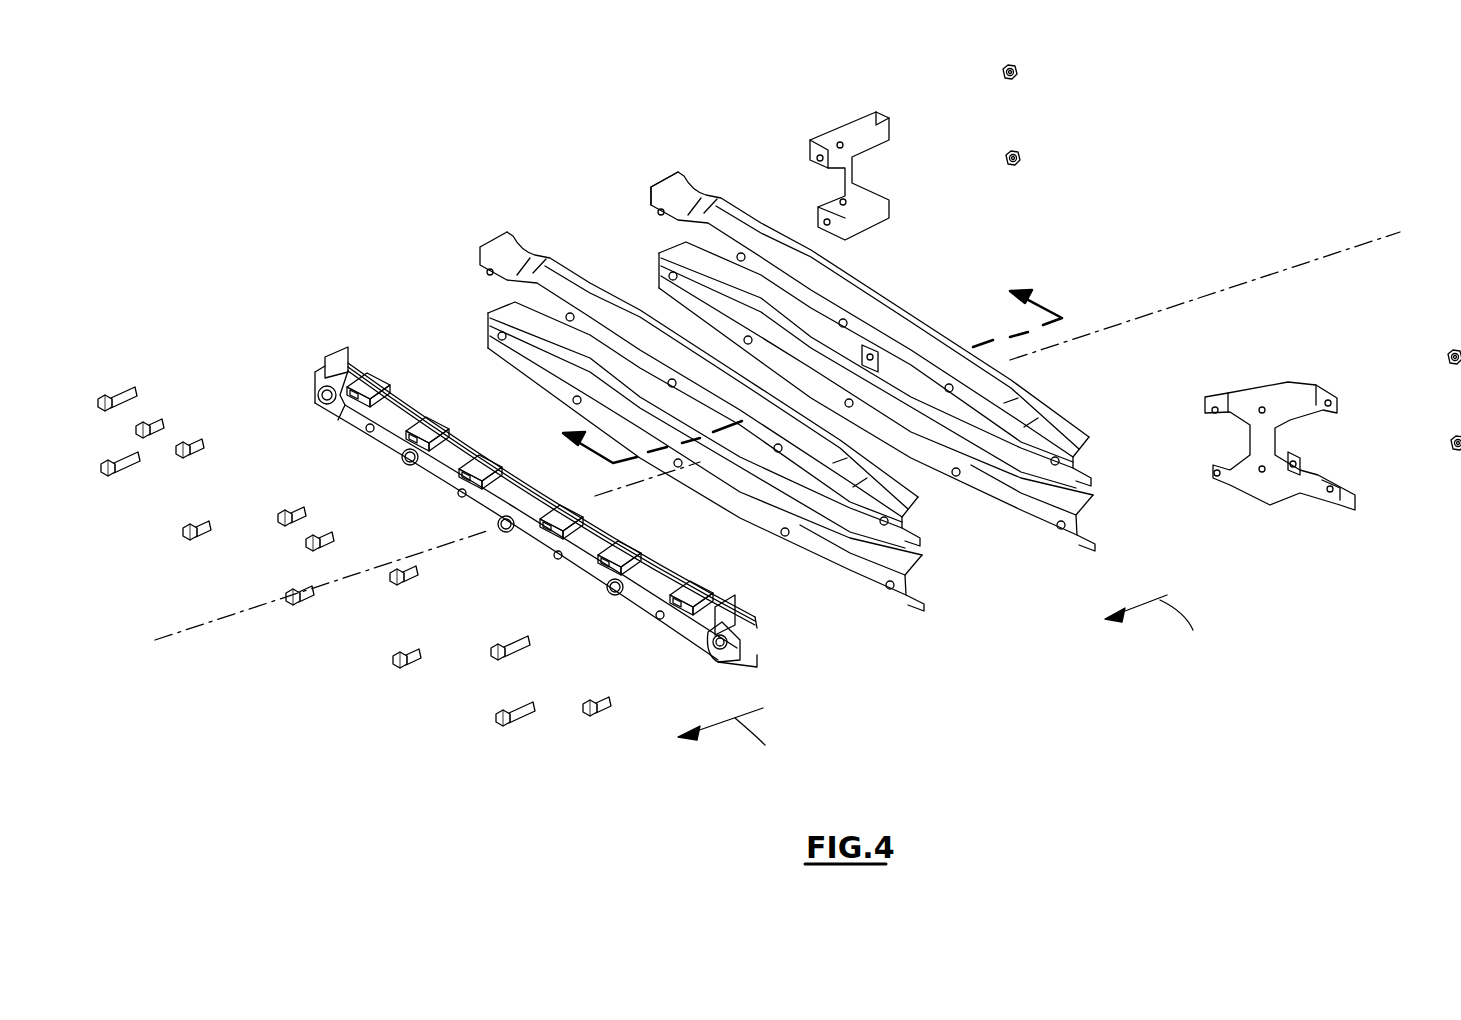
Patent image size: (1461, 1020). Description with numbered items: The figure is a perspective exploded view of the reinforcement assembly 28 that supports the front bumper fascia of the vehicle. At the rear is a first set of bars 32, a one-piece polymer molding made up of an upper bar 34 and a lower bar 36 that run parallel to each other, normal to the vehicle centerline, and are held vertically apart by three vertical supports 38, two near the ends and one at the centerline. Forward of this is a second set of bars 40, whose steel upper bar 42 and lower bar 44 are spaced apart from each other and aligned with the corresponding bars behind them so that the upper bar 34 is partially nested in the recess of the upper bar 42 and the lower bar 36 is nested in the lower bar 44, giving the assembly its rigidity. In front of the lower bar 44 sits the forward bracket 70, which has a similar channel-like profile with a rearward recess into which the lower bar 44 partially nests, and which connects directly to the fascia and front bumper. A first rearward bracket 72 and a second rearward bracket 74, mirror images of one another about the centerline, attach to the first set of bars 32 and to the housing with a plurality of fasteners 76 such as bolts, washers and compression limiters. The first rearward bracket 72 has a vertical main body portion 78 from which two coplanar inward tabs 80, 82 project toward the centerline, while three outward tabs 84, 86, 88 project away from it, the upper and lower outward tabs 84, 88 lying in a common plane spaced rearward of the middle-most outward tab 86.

The reinforcement assembly 28 is at (280, 302).
The first set of bars 32 is at (1075, 565).
The upper bar 34 is at (904, 333).
The lower bar 36 is at (1017, 505).
The vertical supports 38 is at (705, 215).
The second set of bars 40 is at (893, 620).
The upper bar 42 is at (857, 505).
The lower bar 44 is at (755, 515).
The forward bracket 70 is at (385, 445).
The first rearward bracket 72 is at (1288, 535).
The second rearward bracket 74 is at (826, 115).
The fasteners 76 is at (392, 585).
The main body portion 78 is at (1268, 443).
The inward tab 80 is at (1220, 405).
The inward tab 82 is at (1228, 482).
The upper outward tab 84 is at (1328, 395).
The middle-most outward tab 86 is at (1303, 467).
The lower outward tab 88 is at (1340, 497).